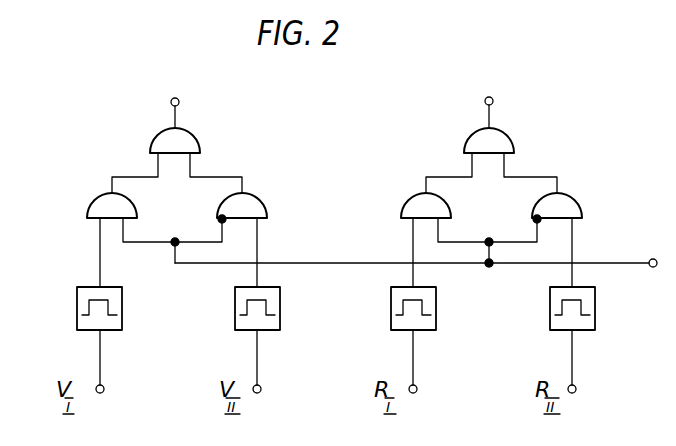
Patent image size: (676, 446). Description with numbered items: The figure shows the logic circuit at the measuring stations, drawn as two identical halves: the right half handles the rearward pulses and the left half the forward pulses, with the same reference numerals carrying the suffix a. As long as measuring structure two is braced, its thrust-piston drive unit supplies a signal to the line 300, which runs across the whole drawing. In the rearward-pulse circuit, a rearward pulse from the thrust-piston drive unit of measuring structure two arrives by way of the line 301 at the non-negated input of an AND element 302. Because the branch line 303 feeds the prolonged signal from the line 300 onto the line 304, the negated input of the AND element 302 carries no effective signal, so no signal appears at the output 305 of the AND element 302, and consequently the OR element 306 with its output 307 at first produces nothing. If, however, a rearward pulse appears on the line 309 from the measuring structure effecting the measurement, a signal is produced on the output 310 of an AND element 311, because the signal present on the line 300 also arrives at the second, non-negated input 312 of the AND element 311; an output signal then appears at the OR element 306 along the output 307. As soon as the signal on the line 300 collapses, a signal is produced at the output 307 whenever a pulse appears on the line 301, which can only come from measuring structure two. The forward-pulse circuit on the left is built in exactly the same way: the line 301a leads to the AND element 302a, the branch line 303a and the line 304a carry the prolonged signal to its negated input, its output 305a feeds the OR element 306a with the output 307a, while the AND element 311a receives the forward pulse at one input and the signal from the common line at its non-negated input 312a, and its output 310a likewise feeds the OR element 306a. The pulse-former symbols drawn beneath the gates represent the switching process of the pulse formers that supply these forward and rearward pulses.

The line 300 is at (612, 266).
The line 301 is at (577, 232).
The AND element 302 is at (575, 195).
The branch line 303 is at (487, 268).
The line 304 is at (513, 247).
The output of the AND element 305 is at (527, 173).
The OR element 306 is at (503, 130).
The output 307 is at (486, 115).
The line 309 is at (412, 272).
The output 310 is at (442, 172).
The AND element 311 is at (422, 192).
The non-negated input 312 is at (465, 247).
The line 301a is at (262, 243).
The AND element 302a is at (266, 210).
The branch line 303a is at (178, 266).
The line 304a is at (198, 241).
The output of the AND element 305a is at (222, 175).
The OR element 306a is at (197, 135).
The output 307a is at (172, 113).
The output 310a is at (117, 172).
The AND element 311a is at (90, 207).
The non-negated input 312a is at (150, 243).